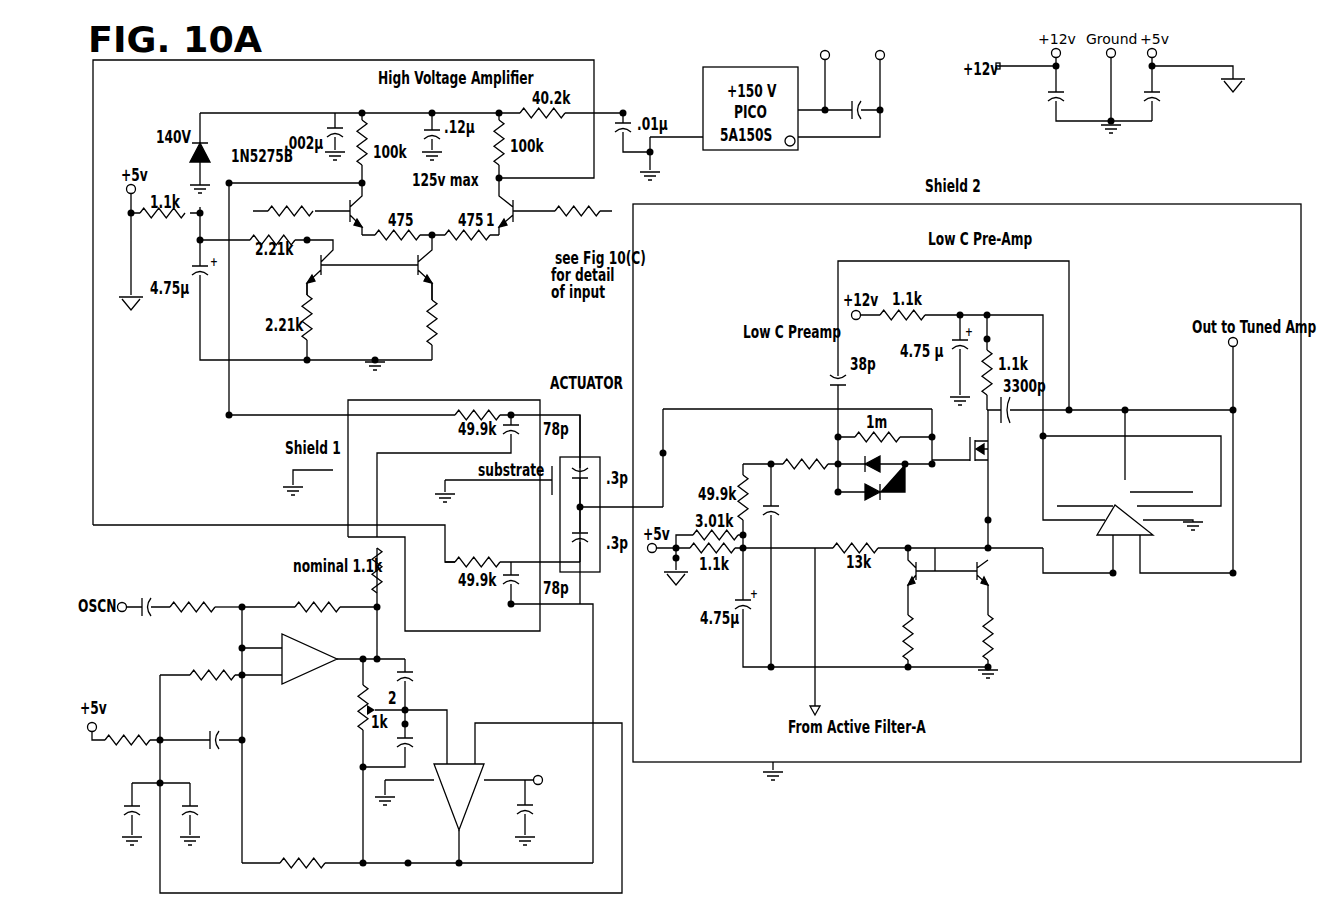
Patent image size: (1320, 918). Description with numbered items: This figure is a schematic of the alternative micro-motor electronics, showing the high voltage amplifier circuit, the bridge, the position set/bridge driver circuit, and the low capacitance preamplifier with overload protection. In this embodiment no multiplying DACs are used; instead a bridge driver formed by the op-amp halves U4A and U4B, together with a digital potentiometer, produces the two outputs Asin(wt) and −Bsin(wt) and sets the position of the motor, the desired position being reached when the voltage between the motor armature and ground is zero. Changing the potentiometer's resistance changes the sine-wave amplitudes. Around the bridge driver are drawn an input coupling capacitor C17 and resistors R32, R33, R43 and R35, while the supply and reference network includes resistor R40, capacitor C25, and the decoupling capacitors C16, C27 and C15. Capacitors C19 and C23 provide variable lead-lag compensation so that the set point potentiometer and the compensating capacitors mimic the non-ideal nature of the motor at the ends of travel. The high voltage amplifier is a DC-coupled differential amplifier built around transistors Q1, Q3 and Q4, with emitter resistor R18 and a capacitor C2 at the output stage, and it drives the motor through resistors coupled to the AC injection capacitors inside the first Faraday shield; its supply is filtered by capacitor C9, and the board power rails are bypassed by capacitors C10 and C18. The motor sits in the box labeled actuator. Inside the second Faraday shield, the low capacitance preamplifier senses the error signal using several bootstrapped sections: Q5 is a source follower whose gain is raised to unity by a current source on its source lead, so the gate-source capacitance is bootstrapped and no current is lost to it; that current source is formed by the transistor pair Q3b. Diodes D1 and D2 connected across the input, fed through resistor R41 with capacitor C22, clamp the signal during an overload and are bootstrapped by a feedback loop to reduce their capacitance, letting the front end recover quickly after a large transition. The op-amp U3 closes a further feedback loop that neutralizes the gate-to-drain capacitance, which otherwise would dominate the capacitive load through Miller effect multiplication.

The 1.5k resistor R18 is at (416, 321).
The FMMT497 transistor Q1 is at (325, 197).
The capacitor / FMMT497 transistor stage C2 is at (544, 193).
The FMMT3904 transistor Q4 is at (344, 266).
The FMMT3904 transistor Q3 is at (461, 267).
The 4.75µ capacitor C9 is at (855, 85).
The 22µ capacitor C10 is at (1048, 98).
The 22µ capacitor C18 is at (1170, 96).
The compensating capacitor C17 is at (148, 604).
The 3.01k resistor R32 is at (206, 605).
The 3.01k resistor R33 is at (309, 595).
The bridge driver U4B is at (312, 668).
The 3.01k resistor R43 is at (201, 672).
The compensating capacitor C19 is at (418, 678).
The compensating capacitor C23 is at (401, 738).
The bridge driver U4A is at (479, 802).
The 4.75µ capacitor C15 is at (543, 812).
The 3.01k resistor R35 is at (417, 852).
The 221 ohm resistor R40 is at (126, 739).
The 24p capacitor C25 is at (203, 733).
The 4.75µ capacitor C16 is at (116, 814).
The .01µ capacitor C27 is at (204, 814).
The source follower Q5 is at (989, 449).
The 100k resistor R41 is at (804, 454).
The overload protection diode D1 is at (898, 455).
The overload protection diode D2 is at (871, 495).
The .1µ capacitor C22 is at (784, 565).
The FMMT3904 transistor pair Q3b is at (983, 605).
The TLC080 op-amp U3 is at (1138, 493).